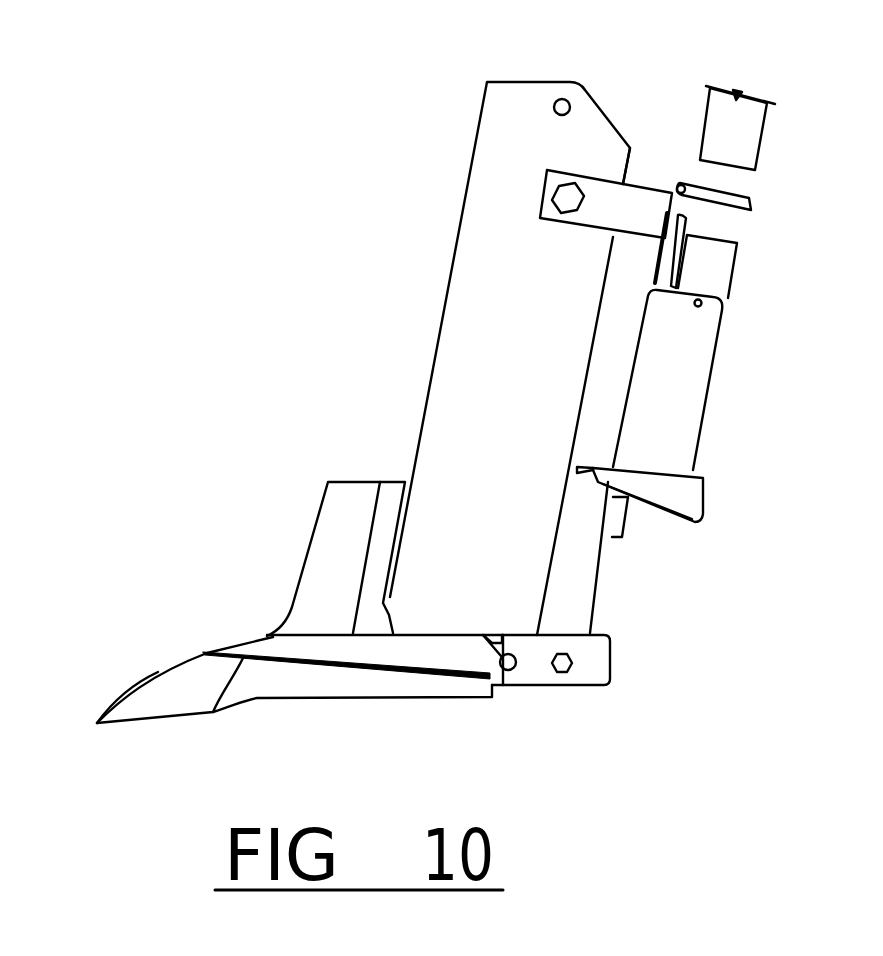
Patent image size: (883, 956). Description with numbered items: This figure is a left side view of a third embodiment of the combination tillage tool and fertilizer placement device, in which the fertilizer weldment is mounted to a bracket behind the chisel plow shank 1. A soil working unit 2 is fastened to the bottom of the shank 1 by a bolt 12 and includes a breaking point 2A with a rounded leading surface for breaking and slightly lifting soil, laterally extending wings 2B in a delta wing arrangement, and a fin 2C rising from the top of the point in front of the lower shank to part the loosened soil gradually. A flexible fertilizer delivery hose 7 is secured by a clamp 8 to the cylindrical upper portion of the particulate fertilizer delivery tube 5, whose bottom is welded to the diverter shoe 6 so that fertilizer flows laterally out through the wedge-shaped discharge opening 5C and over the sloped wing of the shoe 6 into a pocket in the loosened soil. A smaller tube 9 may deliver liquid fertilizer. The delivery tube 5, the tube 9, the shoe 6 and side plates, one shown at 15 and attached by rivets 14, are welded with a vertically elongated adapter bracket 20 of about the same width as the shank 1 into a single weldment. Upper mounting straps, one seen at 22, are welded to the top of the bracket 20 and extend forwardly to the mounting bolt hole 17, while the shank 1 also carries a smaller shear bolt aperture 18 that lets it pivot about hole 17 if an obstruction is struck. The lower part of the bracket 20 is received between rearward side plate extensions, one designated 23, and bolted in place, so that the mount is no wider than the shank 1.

The chisel plow shank 1 is at (443, 290).
The soil working unit 2 is at (410, 698).
The breaking point 2A is at (158, 672).
The wings 2B is at (477, 676).
The fin 2C is at (318, 515).
The fertilizer delivery tube 5 is at (735, 267).
The lateral discharge opening 5C is at (613, 468).
The diverter shoe 6 is at (703, 502).
The fertilizer delivery hose 7 is at (762, 137).
The clamp 8 is at (752, 203).
The smaller tube 9 is at (685, 223).
The bolt 12 is at (514, 668).
The rivets 14 is at (701, 305).
The side plate 15 is at (707, 407).
The mounting bolt hole 17 is at (543, 192).
The shear bolt aperture 18 is at (560, 98).
The adapter bracket 20 is at (600, 587).
The mounting strap 22 is at (637, 183).
The side plate extension 23 is at (602, 663).